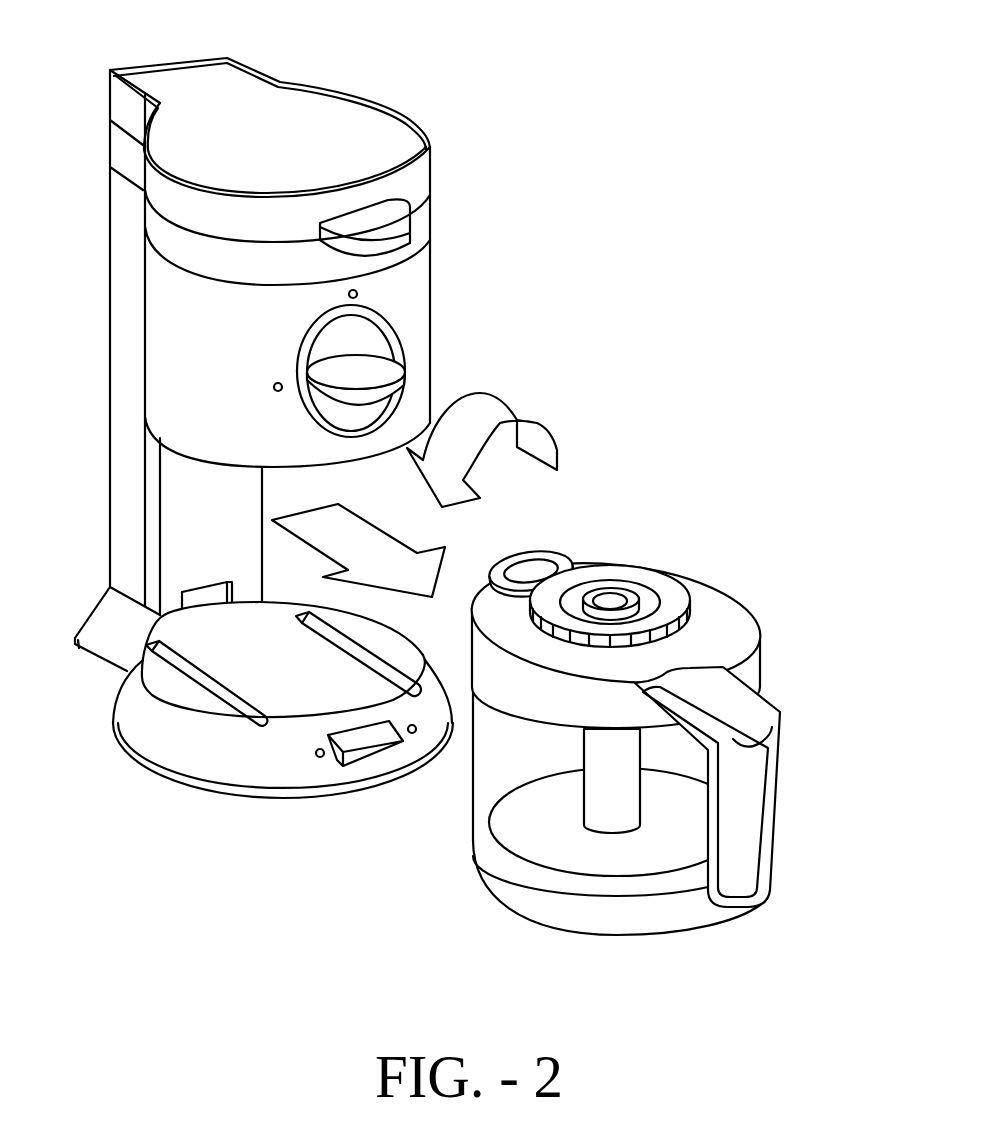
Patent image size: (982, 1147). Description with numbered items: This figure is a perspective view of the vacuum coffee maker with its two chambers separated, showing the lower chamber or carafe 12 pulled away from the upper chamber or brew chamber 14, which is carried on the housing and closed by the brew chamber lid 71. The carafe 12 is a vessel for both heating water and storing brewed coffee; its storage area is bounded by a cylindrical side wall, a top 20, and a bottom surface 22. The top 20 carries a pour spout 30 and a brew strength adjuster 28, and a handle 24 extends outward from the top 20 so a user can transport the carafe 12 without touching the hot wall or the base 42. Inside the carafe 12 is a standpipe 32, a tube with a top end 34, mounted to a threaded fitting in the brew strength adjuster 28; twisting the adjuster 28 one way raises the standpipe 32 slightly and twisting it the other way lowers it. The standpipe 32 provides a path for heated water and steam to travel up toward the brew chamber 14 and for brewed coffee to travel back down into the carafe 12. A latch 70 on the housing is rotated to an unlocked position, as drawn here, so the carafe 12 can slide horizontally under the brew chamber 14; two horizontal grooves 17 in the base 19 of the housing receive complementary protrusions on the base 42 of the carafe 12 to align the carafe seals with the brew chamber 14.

The carafe 12 is at (624, 747).
The brew chamber 14 is at (333, 435).
The horizontal grooves 17 is at (203, 673).
The base 19 is at (255, 782).
The top 20 is at (747, 630).
The bottom surface 22 is at (600, 853).
The handle 24 is at (748, 850).
The brew strength adjuster 28 is at (670, 602).
The pour spout 30 is at (532, 562).
The standpipe 32 is at (595, 820).
The top end 34 is at (627, 597).
The base 42 is at (532, 918).
The latch 70 is at (409, 298).
The brew chamber lid 71 is at (393, 118).